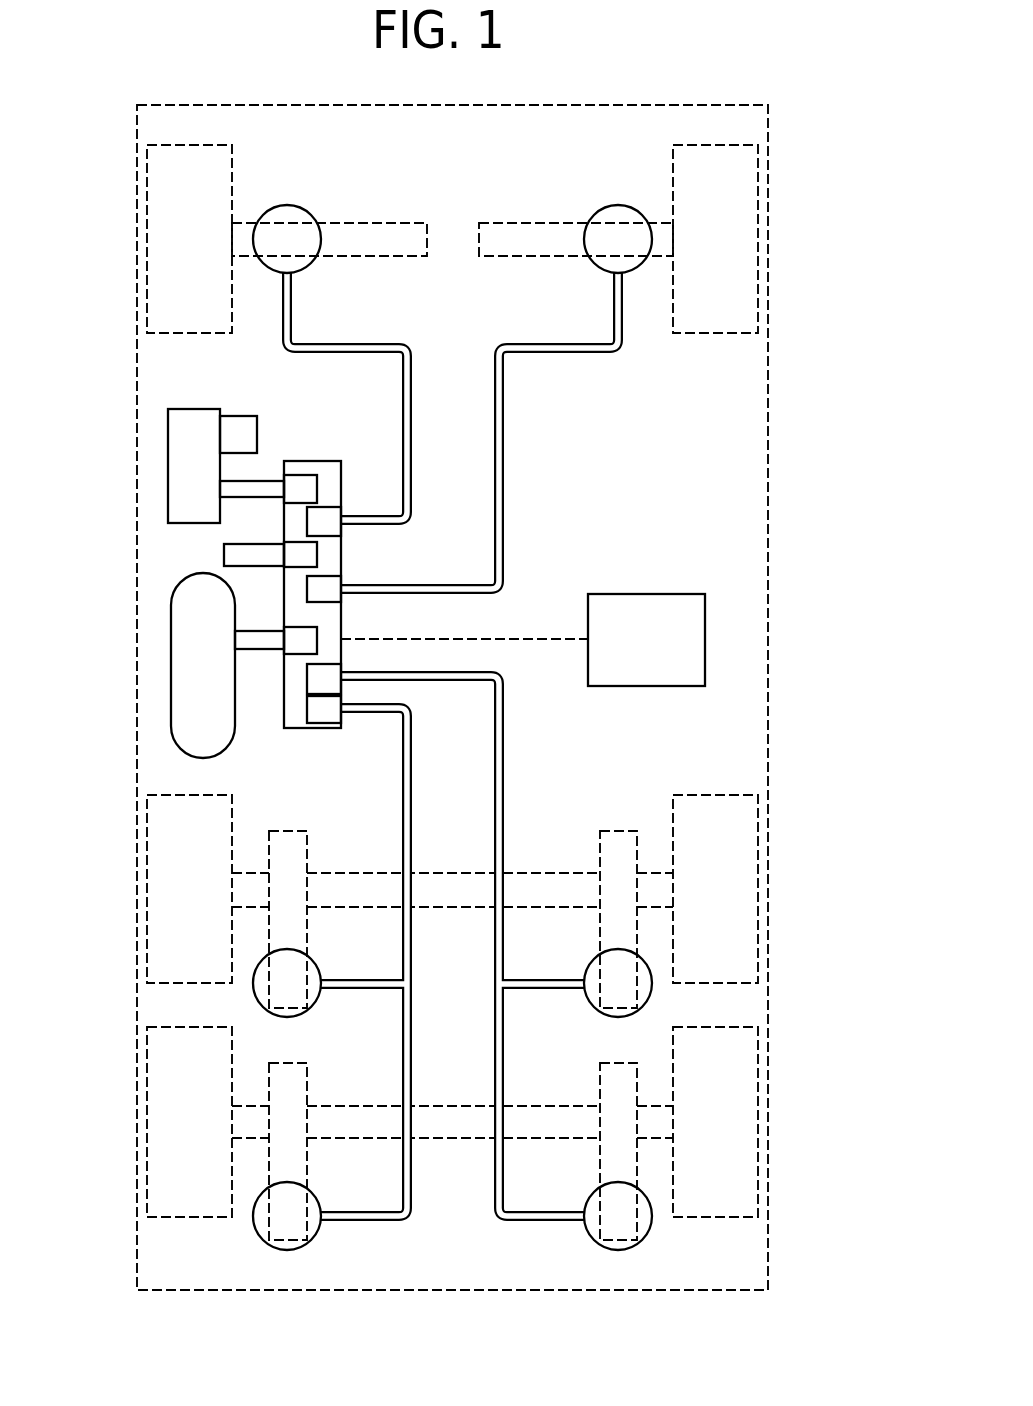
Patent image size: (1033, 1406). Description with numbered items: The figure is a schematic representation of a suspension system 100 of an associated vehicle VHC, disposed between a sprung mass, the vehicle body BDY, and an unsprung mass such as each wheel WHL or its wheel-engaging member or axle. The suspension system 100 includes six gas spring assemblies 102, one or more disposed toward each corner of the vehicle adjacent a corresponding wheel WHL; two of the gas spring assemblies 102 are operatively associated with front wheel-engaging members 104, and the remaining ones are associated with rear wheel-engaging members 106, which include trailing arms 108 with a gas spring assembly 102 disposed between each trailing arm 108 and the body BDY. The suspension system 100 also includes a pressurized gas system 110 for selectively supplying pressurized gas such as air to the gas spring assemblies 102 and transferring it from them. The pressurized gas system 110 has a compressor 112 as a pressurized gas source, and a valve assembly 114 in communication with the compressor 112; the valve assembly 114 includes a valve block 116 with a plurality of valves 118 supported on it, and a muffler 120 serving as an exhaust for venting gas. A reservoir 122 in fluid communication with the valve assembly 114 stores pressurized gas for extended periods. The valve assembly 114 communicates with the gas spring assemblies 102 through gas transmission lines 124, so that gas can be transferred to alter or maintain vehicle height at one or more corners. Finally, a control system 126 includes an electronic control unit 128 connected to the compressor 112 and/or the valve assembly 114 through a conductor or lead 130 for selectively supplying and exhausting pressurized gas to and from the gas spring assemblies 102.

The vehicle body BDY is at (637, 103).
The vehicle VHC is at (790, 116).
The wheel WHL is at (167, 218).
The suspension system 100 is at (797, 416).
The gas spring assemblies 102 is at (318, 276).
The front wheel-engaging members 104 is at (368, 223).
The rear wheel-engaging members 106 is at (542, 872).
The trailing arms 108 is at (307, 939).
The pressurized gas system 110 is at (170, 536).
The compressor 112 is at (176, 450).
The valve assembly 114 is at (300, 450).
The valve block 116 is at (332, 483).
The valves 118 is at (310, 555).
The muffler 120 is at (224, 553).
The reservoir 122 is at (184, 636).
The gas transmission lines 124 is at (413, 383).
The control system 126 is at (752, 546).
The electronic control unit 128 is at (665, 654).
The conductor or lead 130 is at (542, 638).